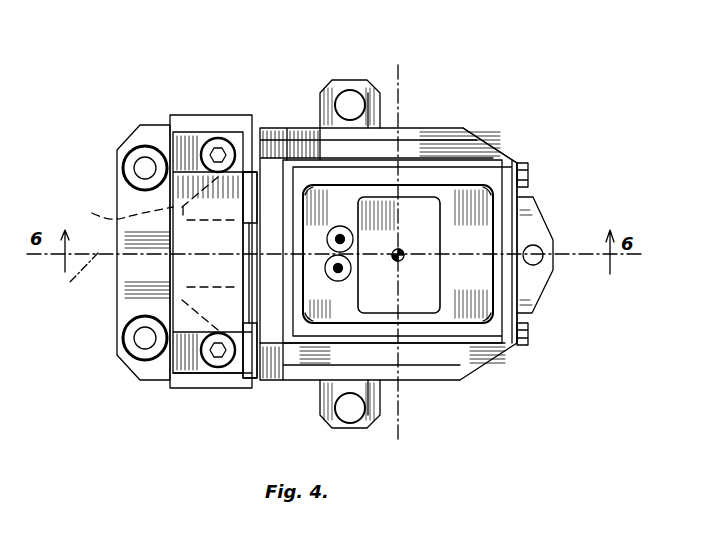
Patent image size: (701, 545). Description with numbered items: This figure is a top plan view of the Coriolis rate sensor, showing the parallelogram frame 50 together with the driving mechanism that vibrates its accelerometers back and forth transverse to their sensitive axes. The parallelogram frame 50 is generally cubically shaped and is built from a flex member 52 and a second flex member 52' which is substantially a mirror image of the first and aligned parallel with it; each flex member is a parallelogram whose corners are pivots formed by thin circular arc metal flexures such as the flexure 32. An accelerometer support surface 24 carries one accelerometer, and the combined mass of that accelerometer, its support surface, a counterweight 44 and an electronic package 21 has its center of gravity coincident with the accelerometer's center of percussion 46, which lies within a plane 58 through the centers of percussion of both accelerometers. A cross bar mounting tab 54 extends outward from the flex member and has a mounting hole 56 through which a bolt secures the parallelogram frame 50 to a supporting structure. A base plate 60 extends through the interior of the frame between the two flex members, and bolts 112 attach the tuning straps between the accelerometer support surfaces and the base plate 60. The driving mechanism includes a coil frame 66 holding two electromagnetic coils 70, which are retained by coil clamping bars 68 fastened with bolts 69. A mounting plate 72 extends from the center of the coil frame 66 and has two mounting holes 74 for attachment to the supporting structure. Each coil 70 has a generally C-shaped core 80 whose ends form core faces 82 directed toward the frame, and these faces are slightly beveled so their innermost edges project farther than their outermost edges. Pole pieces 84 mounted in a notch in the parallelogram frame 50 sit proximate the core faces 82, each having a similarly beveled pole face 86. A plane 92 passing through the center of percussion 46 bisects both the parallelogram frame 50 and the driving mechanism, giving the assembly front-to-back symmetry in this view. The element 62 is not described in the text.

The electronic package 21 is at (440, 240).
The accelerometer support surface 24 is at (336, 216).
The flexure 32 is at (307, 385).
The counterweight 44 is at (417, 238).
The center of percussion 46 is at (400, 262).
The parallelogram frame 50 is at (523, 372).
The flex member 52 is at (388, 281).
The second flex member 52' is at (495, 133).
The cross bar mounting tab 54 is at (380, 118).
The mounting hole 56 is at (348, 97).
The plane 58 is at (400, 92).
The base plate 60 is at (533, 227).
The flange hole 62 is at (540, 263).
The coil frame 66 is at (227, 383).
The coil clamping bar 68 is at (193, 367).
The bolt 69 is at (208, 147).
The electromagnetic coil 70 is at (167, 260).
The mounting plate 72 is at (158, 305).
The mounting hole 74 is at (123, 160).
The core 80 is at (154, 253).
The core face 82 is at (260, 190).
The pole piece 84 is at (270, 305).
The pole face 86 is at (257, 190).
The plane 92 is at (69, 278).
The bolt 112 is at (528, 172).